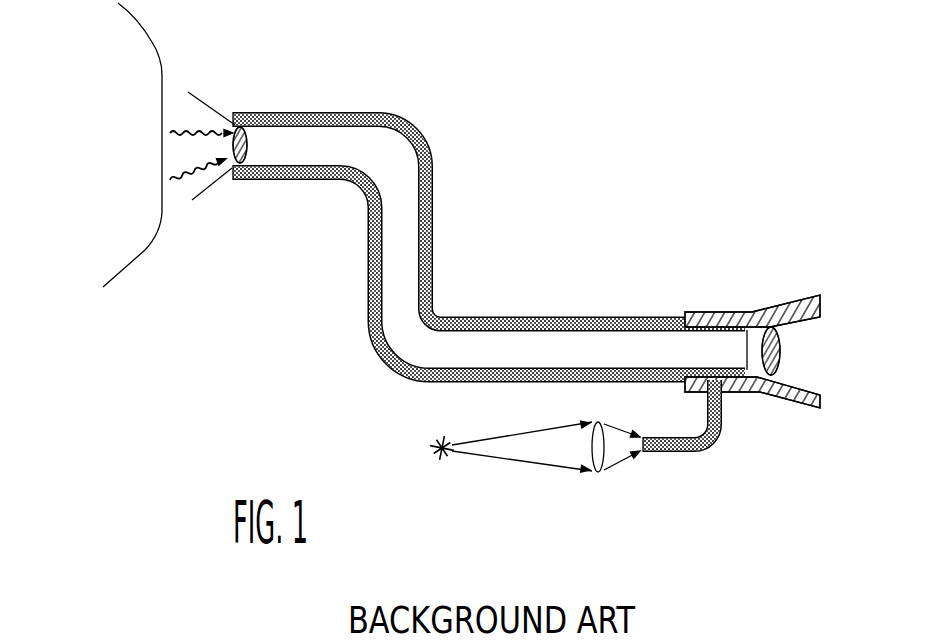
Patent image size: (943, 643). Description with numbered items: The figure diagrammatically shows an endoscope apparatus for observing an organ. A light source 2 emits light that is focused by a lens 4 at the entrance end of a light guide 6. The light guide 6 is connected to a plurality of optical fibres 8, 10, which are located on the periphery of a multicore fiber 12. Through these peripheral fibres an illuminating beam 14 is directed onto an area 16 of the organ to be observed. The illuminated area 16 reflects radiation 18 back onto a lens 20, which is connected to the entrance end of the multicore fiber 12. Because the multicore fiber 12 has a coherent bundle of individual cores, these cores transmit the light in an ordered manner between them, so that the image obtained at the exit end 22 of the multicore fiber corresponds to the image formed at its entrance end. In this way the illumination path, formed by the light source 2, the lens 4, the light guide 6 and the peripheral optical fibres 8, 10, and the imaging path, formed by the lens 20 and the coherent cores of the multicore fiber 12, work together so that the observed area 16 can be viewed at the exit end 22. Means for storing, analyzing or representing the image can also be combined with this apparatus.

The light source 2 is at (430, 440).
The lens 4 is at (603, 474).
The light guide 6 is at (717, 440).
The optical fibre 8 is at (366, 190).
The optical fibre 10 is at (418, 138).
The multicore fiber 12 is at (517, 337).
The illuminating beam 14 is at (208, 100).
The area of an organ to be observed 16 is at (147, 240).
The reflected radiation 18 is at (205, 195).
The lens 20 is at (248, 160).
The exit end 22 is at (712, 310).